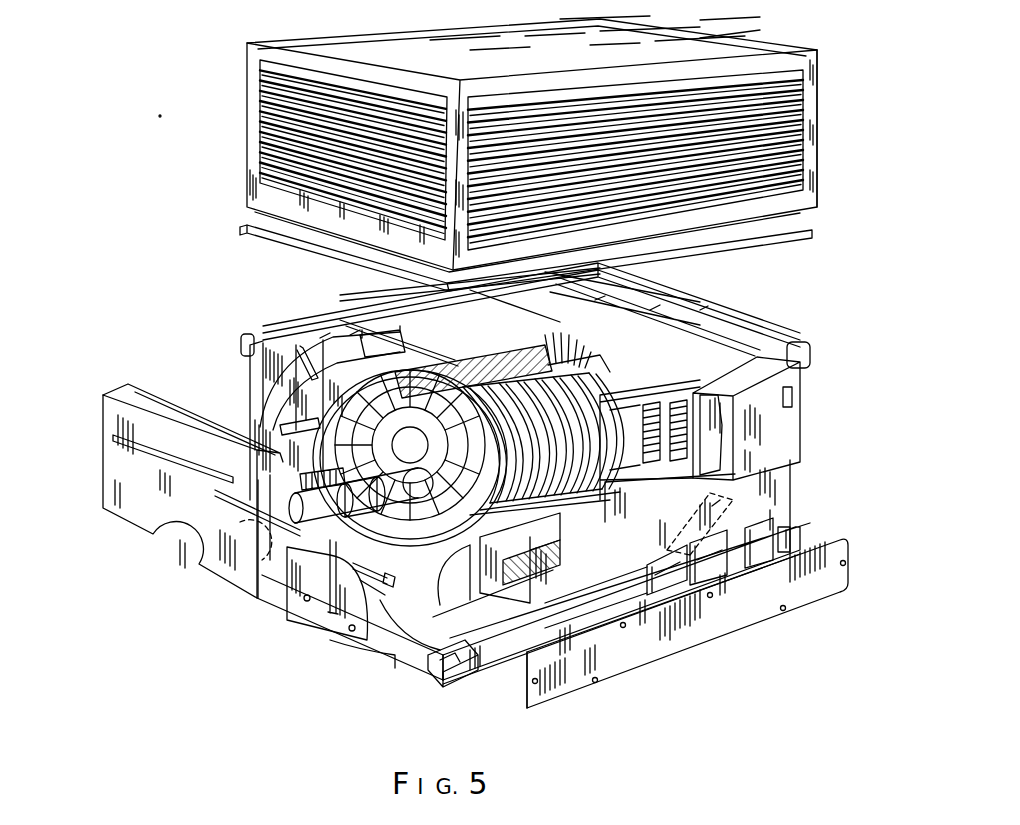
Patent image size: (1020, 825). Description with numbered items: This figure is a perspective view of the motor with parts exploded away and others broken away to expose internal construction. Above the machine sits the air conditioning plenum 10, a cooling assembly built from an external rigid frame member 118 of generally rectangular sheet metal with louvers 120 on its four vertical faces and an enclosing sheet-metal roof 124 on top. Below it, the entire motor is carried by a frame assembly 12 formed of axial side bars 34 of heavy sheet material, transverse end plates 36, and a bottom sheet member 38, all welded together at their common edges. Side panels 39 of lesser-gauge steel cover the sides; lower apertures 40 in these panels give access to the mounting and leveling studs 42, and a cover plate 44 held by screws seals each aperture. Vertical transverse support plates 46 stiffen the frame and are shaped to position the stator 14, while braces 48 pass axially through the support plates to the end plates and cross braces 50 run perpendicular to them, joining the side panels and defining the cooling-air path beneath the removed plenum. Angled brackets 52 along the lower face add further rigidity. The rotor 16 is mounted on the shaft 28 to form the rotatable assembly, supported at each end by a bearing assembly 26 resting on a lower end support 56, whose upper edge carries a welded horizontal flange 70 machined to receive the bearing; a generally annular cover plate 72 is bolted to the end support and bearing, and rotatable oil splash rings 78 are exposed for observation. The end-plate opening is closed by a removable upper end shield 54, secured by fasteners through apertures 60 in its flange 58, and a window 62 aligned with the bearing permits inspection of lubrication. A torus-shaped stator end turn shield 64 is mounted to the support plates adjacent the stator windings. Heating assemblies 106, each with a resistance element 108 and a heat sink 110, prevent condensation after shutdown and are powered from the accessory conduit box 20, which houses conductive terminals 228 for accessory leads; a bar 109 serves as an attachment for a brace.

The air conditioning plenum 10 is at (556, 63).
The frame assembly 12 is at (340, 335).
The stator assembly 14 is at (466, 364).
The rotor assembly 16 is at (608, 496).
The accessory conduit box 20 is at (798, 420).
The bearing assembly 26 is at (330, 482).
The shaft 28 is at (417, 498).
The axial side bars 34 is at (247, 358).
The transverse end plates 36 is at (252, 380).
The bottom sheet member 38 is at (487, 673).
The side panels 39 is at (249, 401).
The lower apertures 40 is at (787, 519).
The mounting and leveling studs 42 is at (440, 663).
The cover plate 44 is at (822, 583).
The transverse support plates 46 is at (320, 338).
The braces 48 is at (650, 310).
The cross braces 50 is at (353, 335).
The angled brackets 52 is at (397, 636).
The upper end shield 54 is at (110, 395).
The lower end support 56 is at (320, 608).
The flange 58 is at (133, 383).
The apertures 60 is at (175, 396).
The window 62 is at (252, 540).
The stator end turn shield 64 is at (334, 410).
The horizontal flange 70 is at (332, 614).
The annular cover plate 72 is at (297, 607).
The oil splash rings 78 is at (287, 542).
The heating assemblies 106 is at (727, 521).
The resistance element 108 is at (702, 500).
The bar 109 is at (600, 647).
The heat sink 110 is at (721, 500).
The external rigid frame member 118 is at (820, 78).
The louvers 120 is at (262, 79).
The roof 124 is at (722, 40).
The conductive terminals 228 is at (724, 433).